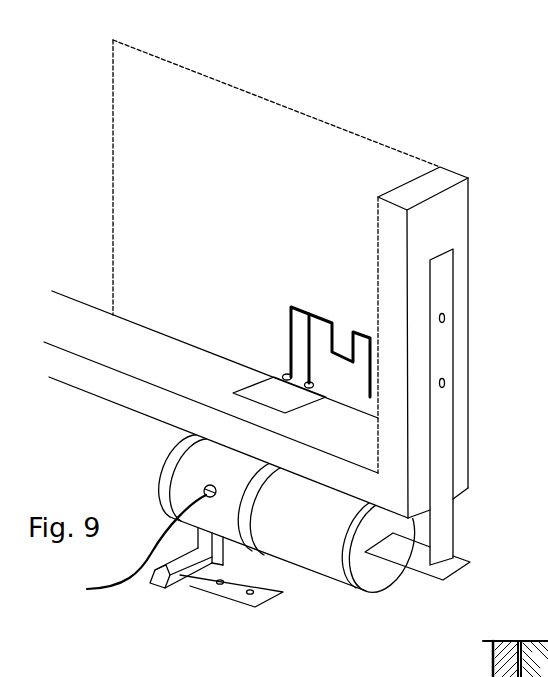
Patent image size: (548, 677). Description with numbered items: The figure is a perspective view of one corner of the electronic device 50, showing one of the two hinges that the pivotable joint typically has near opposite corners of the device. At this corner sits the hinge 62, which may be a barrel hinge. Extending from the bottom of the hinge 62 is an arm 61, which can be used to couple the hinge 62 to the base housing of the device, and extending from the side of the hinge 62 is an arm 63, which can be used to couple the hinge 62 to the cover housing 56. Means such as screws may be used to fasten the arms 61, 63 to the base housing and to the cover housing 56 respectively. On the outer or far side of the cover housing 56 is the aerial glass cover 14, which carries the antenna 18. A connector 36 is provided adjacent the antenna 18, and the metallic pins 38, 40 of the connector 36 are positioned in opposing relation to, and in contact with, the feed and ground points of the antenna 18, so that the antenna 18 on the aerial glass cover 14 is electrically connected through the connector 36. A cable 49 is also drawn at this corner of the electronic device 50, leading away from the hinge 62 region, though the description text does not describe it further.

The aerial glass cover 14 is at (308, 116).
The antenna 18 is at (304, 313).
The connector 36 is at (257, 388).
The metallic pin 38 is at (285, 373).
The metallic pin 40 is at (314, 385).
The cable 49 is at (115, 592).
The electronic device 50 is at (354, 106).
The cover housing 56 is at (447, 173).
The arm 61 is at (229, 598).
The hinge 62 is at (332, 568).
The arm 63 is at (447, 349).